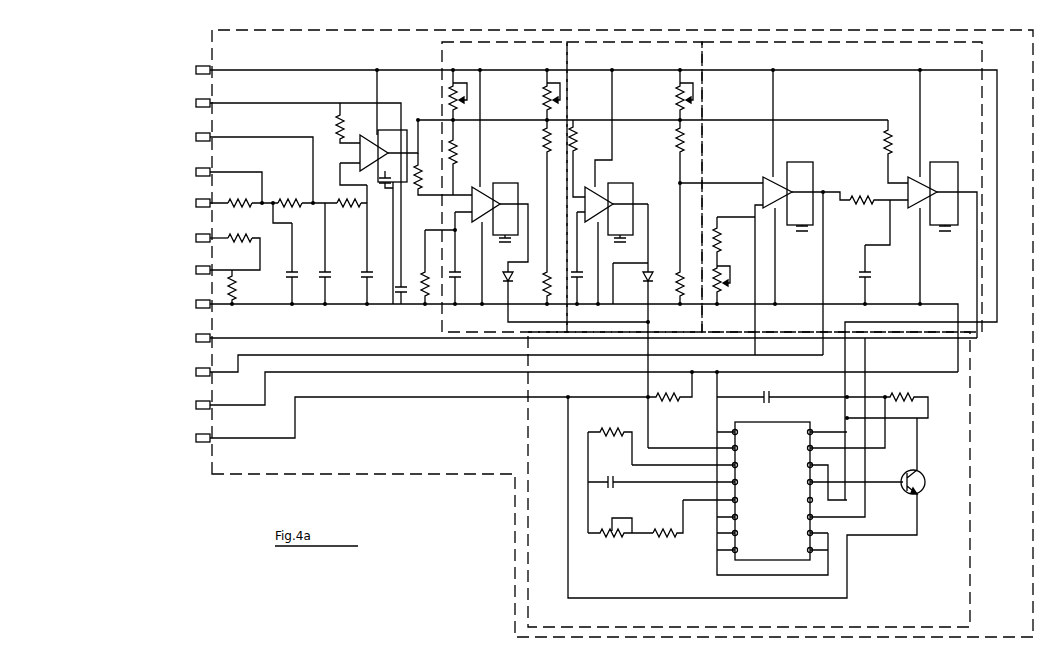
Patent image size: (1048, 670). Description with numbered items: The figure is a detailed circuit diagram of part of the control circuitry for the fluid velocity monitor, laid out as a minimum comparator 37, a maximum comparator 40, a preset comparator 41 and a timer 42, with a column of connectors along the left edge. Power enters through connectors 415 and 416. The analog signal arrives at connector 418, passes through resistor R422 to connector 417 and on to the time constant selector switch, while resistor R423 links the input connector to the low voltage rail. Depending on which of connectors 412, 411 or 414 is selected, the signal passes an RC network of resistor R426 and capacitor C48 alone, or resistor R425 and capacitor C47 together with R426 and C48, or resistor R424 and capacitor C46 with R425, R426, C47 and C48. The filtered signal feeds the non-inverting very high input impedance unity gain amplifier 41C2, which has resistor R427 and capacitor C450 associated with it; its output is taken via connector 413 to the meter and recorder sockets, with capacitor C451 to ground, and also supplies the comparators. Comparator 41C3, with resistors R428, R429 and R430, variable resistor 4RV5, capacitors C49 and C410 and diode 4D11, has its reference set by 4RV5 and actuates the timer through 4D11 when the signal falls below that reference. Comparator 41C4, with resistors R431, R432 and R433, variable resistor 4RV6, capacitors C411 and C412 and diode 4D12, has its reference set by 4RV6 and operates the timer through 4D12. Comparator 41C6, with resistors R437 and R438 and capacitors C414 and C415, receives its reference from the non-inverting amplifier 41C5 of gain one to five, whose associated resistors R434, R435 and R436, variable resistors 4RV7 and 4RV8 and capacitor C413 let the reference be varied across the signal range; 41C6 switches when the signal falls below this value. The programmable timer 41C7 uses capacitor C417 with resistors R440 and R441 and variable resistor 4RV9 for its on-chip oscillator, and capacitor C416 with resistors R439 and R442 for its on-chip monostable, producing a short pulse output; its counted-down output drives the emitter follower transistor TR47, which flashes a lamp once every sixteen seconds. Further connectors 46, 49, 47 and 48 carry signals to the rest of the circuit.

The minimum comparator 37 is at (461, 58).
The maximum comparator 40 is at (589, 58).
The preset comparator 41 is at (723, 58).
The timer 42 is at (560, 624).
The connector 416 is at (586, 276).
The connector 413 is at (288, 194).
The connector 412 is at (244, 161).
The connector 411 is at (219, 178).
The connector 414 is at (271, 204).
The connector 417 is at (202, 231).
The connector 418 is at (218, 256).
The connector 415 is at (567, 329).
The output terminal 46 is at (578, 331).
The terminal 49 is at (501, 365).
The terminal 47 is at (569, 390).
The terminal 48 is at (414, 419).
The resistor R424 is at (233, 196).
The resistor R425 is at (285, 195).
The resistor R426 is at (339, 197).
The resistor R422 is at (234, 230).
The resistor R423 is at (231, 278).
The capacitor C46 is at (291, 277).
The capacitor C47 is at (325, 272).
The capacitor C48 is at (367, 272).
The resistor R427 is at (330, 123).
The non-inverting very high input impedance unity gain amplifier 41C2 is at (602, 187).
The capacitor C450 is at (382, 188).
The resistor R430 is at (437, 185).
The capacitor C451 is at (399, 292).
The resistor R429 is at (411, 279).
The variable resistor 4RV5 is at (428, 95).
The resistor R428 is at (462, 154).
The comparator 41C3 is at (482, 187).
The capacitor C49 is at (453, 258).
The capacitor C410 is at (498, 248).
The diode 4D11 is at (506, 284).
The resistor R431 is at (545, 138).
The resistor R432 is at (531, 234).
The variable resistor 4RV6 is at (521, 95).
The resistor R433 is at (589, 158).
The comparator 41C4 is at (599, 187).
The capacitor C412 is at (592, 258).
The capacitor C411 is at (619, 247).
The diode 4D12 is at (635, 326).
The variable resistor 4RV7 is at (656, 95).
The resistor R434 is at (697, 151).
The resistor R435 is at (667, 243).
The non-inverting amplifier 41C5 is at (783, 212).
The capacitor C413 is at (795, 240).
The resistor R436 is at (733, 241).
The variable resistor 4RV8 is at (731, 284).
The resistor R437 is at (869, 189).
The resistor R438 is at (874, 151).
The comparator 41C6 is at (893, 293).
The capacitor C414 is at (942, 240).
The capacitor C415 is at (883, 274).
The resistor R439 is at (670, 386).
The capacitor C416 is at (782, 391).
The resistor R442 is at (887, 398).
The transistor TR47 is at (762, 497).
The programmable timer 41C7 is at (758, 476).
The resistor R440 is at (603, 472).
The capacitor C417 is at (661, 473).
The variable resistor 4RV9 is at (614, 540).
The resistor R441 is at (661, 518).